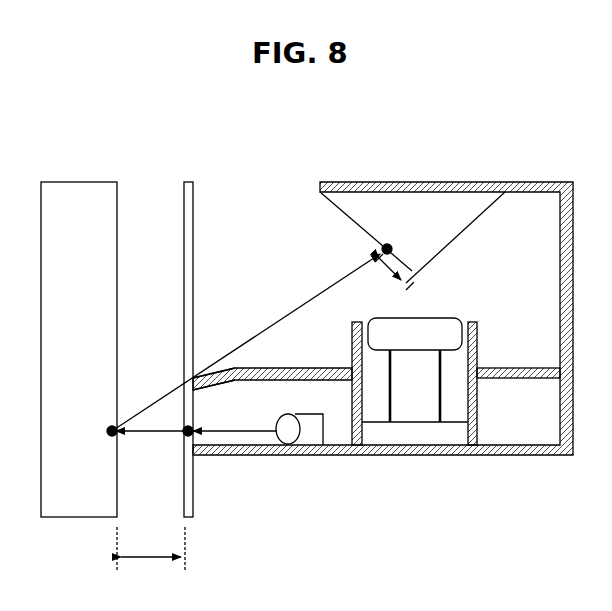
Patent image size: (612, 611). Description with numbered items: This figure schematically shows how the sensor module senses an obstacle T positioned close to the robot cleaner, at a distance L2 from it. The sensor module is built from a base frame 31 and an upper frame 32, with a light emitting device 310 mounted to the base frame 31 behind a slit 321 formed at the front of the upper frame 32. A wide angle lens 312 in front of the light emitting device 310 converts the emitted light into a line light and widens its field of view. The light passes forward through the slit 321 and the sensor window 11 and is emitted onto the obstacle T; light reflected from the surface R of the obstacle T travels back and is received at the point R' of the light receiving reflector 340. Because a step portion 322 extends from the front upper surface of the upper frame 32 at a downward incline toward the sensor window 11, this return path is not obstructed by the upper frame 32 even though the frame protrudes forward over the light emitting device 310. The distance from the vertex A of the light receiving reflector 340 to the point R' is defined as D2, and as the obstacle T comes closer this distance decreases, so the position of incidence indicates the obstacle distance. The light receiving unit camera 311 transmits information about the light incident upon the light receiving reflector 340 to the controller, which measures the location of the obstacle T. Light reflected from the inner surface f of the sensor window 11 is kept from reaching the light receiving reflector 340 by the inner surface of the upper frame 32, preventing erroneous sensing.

The obstacle T is at (80, 191).
The sensor window 11 is at (188, 186).
The base frame 31 is at (522, 453).
The upper frame 32 is at (276, 368).
The slit 321 is at (316, 397).
The step portion 322 is at (213, 377).
The light receiving reflector 340 is at (456, 228).
The light receiving unit camera 311 is at (413, 341).
The light emitting device 310 is at (310, 438).
The wide angle lens 312 is at (287, 441).
The surface of the obstacle R is at (232, 348).
The point of incidence on the light receiving reflector R' is at (364, 245).
The inner surface of the sensor window f is at (222, 441).
The vertex of the light receiving reflector A is at (420, 284).
The distance from the vertex to point R' D2 is at (386, 278).
The distance between the obstacle and the robot cleaner L2 is at (151, 548).